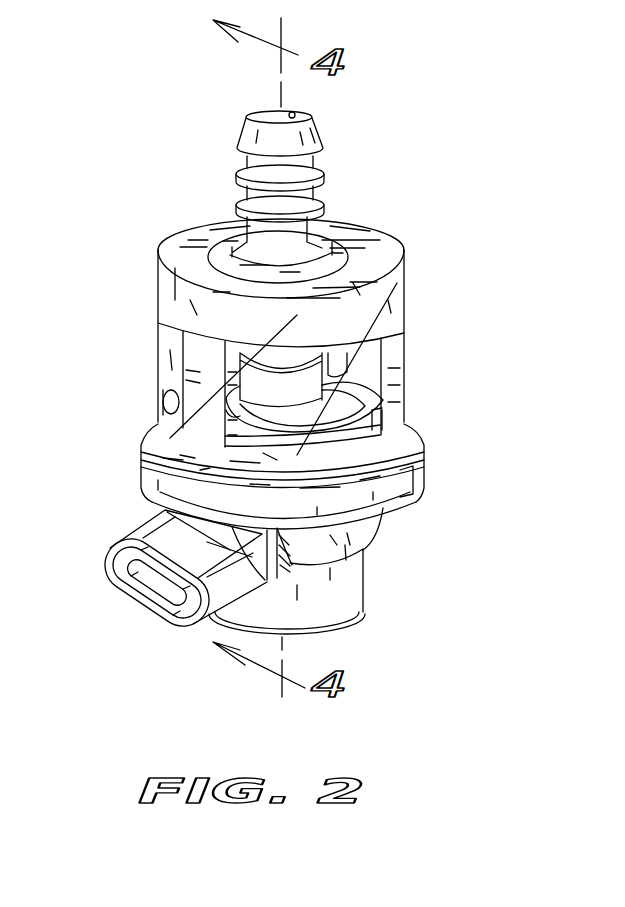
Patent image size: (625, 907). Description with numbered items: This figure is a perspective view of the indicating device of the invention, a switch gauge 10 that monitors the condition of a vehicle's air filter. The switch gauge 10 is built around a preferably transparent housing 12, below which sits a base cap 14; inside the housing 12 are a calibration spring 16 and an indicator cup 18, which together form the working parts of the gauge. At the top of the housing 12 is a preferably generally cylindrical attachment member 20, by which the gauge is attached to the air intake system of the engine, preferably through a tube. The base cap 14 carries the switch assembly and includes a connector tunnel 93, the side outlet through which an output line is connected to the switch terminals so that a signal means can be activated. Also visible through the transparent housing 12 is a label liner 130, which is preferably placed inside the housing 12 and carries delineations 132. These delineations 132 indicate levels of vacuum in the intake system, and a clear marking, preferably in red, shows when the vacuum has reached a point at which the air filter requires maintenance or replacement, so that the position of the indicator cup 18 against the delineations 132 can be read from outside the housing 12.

The switch gauge 10 is at (405, 168).
The housing 12 is at (405, 287).
The base cap 14 is at (378, 535).
The calibration spring 16 is at (347, 355).
The indicator cup 18 is at (385, 412).
The attachment member 20 is at (242, 128).
The connector tunnel 93 is at (143, 610).
The label liner 130 is at (197, 372).
The delineations 132 is at (180, 407).